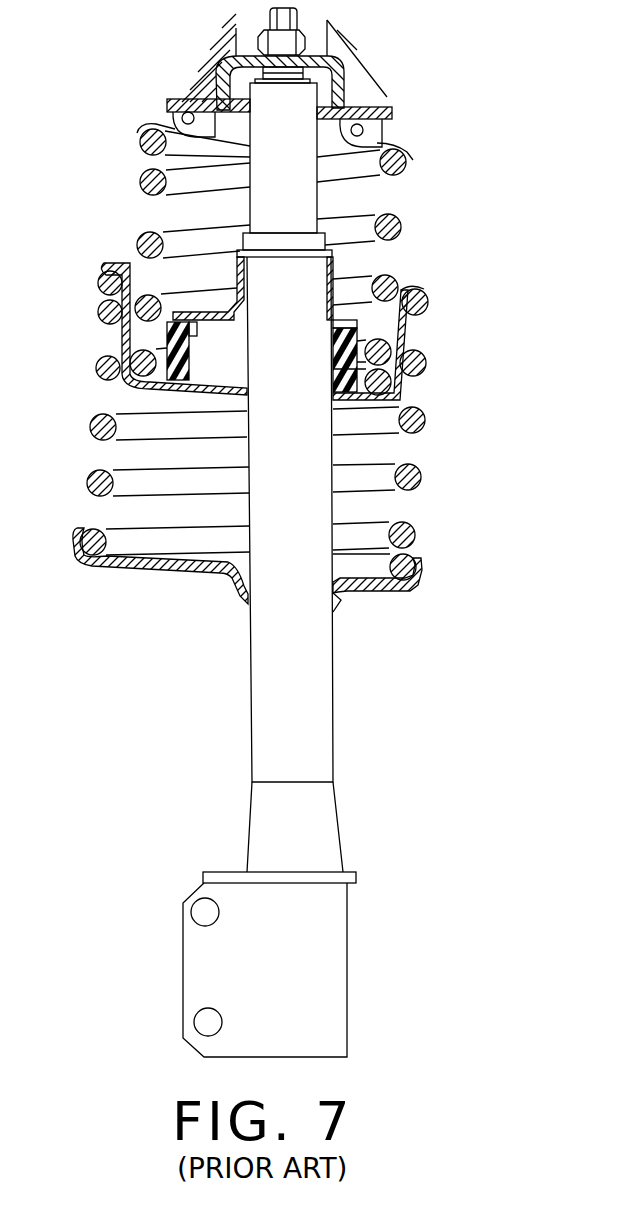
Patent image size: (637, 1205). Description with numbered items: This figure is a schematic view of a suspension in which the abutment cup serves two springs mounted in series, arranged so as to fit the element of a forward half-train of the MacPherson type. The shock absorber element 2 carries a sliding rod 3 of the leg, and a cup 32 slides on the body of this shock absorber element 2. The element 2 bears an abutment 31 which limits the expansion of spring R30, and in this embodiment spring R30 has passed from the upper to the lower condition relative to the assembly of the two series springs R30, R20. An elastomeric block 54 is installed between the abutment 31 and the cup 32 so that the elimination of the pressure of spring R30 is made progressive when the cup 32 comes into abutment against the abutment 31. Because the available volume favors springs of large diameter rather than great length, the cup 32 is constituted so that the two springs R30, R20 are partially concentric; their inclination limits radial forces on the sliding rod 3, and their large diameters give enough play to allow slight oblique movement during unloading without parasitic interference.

The shock absorber element 2 is at (310, 742).
The sliding rod 3 is at (297, 208).
The spring R20 is at (400, 230).
The spring R30 is at (417, 485).
The abutment 31 is at (172, 297).
The cup 32 is at (432, 290).
The elastomeric block 54 is at (167, 344).